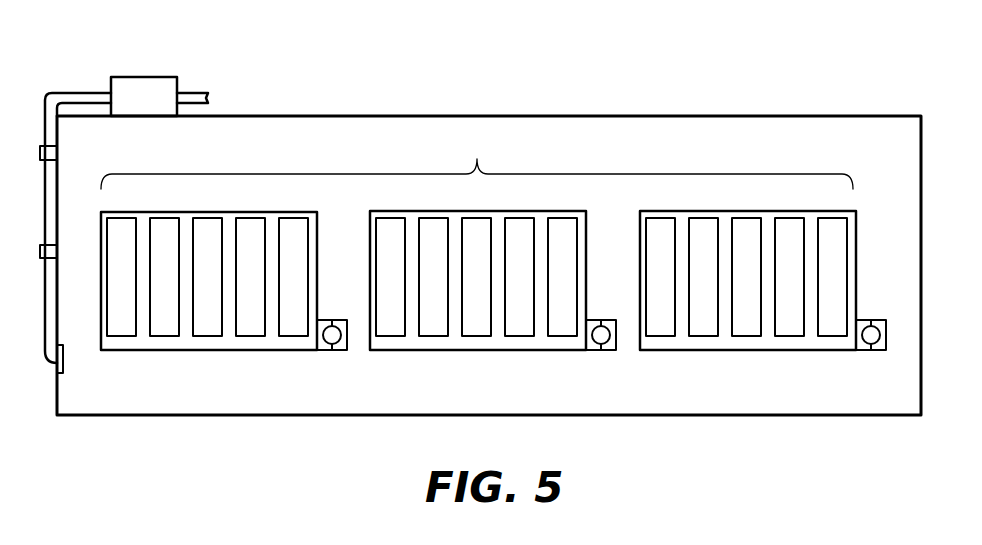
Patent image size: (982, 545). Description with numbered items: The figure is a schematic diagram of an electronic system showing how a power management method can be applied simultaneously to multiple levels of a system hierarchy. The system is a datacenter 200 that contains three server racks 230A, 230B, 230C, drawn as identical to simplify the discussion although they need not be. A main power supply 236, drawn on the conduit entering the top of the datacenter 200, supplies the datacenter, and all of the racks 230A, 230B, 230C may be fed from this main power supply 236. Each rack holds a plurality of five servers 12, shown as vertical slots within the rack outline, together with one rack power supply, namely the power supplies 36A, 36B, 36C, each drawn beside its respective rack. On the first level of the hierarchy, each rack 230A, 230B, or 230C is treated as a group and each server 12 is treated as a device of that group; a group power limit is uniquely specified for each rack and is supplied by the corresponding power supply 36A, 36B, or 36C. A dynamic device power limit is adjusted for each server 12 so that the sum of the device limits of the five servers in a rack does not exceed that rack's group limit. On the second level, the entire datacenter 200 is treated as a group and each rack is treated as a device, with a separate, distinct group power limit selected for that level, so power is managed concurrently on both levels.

The datacenter 200 is at (620, 89).
The main power supply 236 is at (162, 90).
The server 12 is at (122, 230).
The server rack 230A is at (317, 352).
The server rack 230B is at (586, 352).
The server rack 230C is at (856, 352).
The power supply 36A is at (325, 320).
The power supply 36B is at (594, 320).
The power supply 36C is at (870, 320).